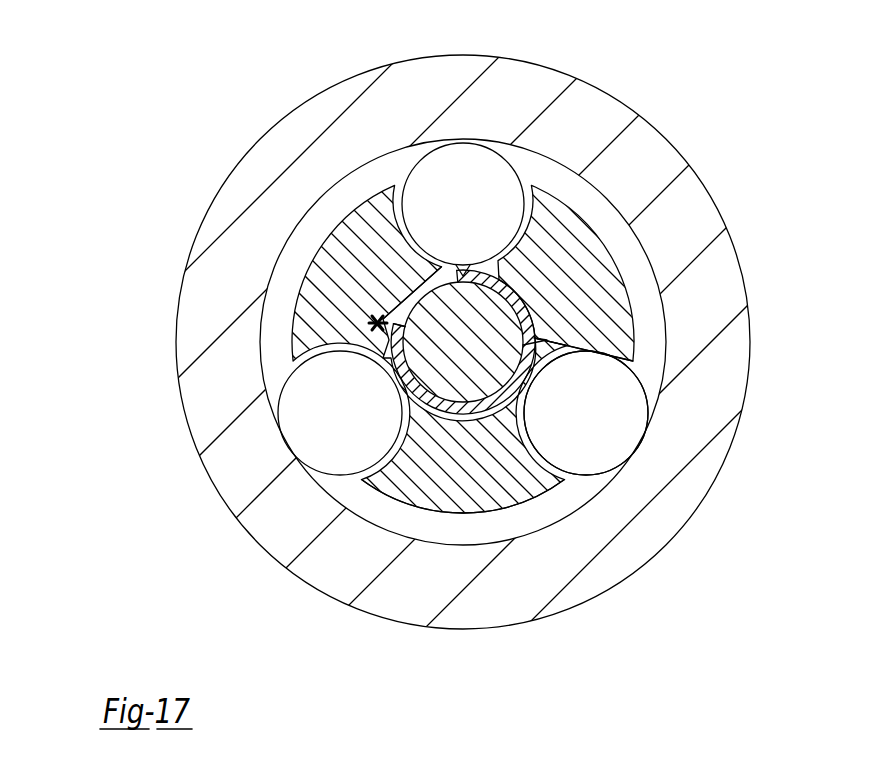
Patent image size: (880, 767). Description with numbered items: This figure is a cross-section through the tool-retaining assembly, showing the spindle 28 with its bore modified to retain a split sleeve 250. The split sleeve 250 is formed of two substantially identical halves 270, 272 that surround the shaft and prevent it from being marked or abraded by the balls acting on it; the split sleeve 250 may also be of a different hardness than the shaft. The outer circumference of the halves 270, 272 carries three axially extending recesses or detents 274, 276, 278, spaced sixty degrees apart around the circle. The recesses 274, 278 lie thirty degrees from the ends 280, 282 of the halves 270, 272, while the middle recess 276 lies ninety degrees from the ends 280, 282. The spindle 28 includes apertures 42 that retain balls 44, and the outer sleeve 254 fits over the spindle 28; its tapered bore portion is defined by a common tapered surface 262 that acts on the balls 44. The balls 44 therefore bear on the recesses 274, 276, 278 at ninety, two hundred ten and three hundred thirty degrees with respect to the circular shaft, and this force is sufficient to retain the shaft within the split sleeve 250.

The sleeve 254 is at (440, 360).
The spindle 28 is at (555, 267).
The half 272 is at (461, 518).
The split sleeve 250 is at (344, 275).
The tapered surface 262 is at (514, 535).
The recess 274 is at (521, 387).
The balls 44 is at (617, 475).
The apertures 42 is at (627, 367).
The end 280 is at (685, 379).
The recess 278 is at (405, 382).
The end 282 is at (330, 345).
The half 270 is at (350, 177).
The recess 276 is at (560, 389).